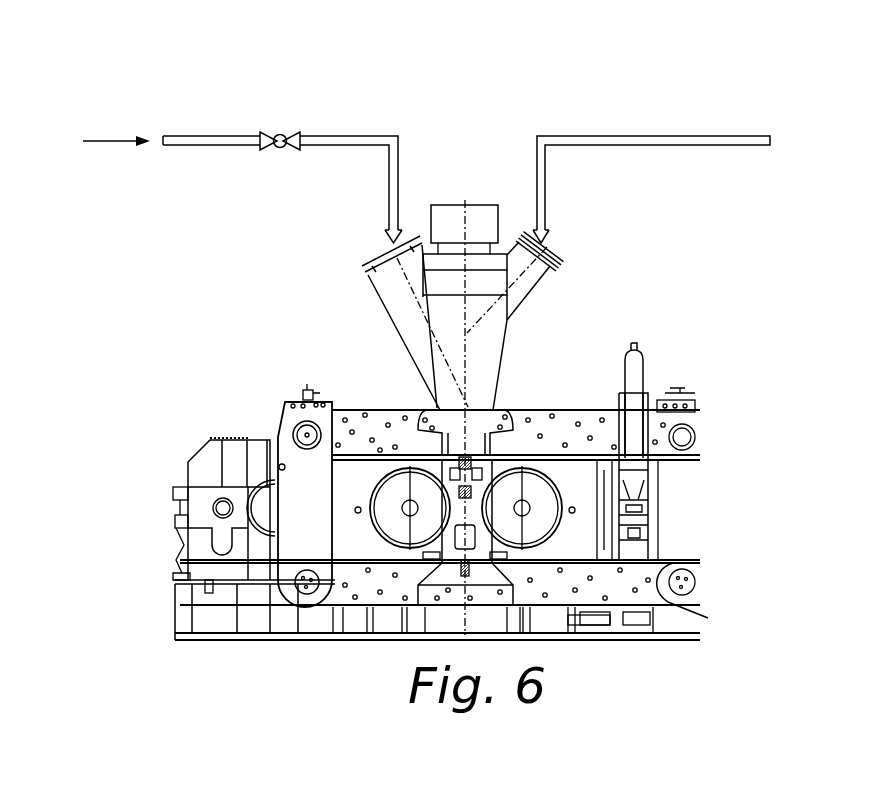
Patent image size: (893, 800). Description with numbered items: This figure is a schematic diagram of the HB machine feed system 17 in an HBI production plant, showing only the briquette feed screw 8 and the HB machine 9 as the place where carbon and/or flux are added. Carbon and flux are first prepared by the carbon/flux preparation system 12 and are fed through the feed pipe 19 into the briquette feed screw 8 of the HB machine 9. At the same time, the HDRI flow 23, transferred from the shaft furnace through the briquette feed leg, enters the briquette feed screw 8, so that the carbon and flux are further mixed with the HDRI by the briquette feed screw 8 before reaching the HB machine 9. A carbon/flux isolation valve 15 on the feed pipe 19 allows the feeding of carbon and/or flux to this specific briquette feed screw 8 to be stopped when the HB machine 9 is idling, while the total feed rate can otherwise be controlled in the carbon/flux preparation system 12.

The briquette feed screw 8 is at (448, 332).
The HB machine 9 is at (140, 563).
The carbon/flux preparation system 12 is at (98, 141).
The carbon/flux isolation valve 15 is at (275, 171).
The HB machine feed system 17 is at (158, 315).
The feed pipe 19 is at (186, 137).
The HDRI flow 23 is at (658, 137).